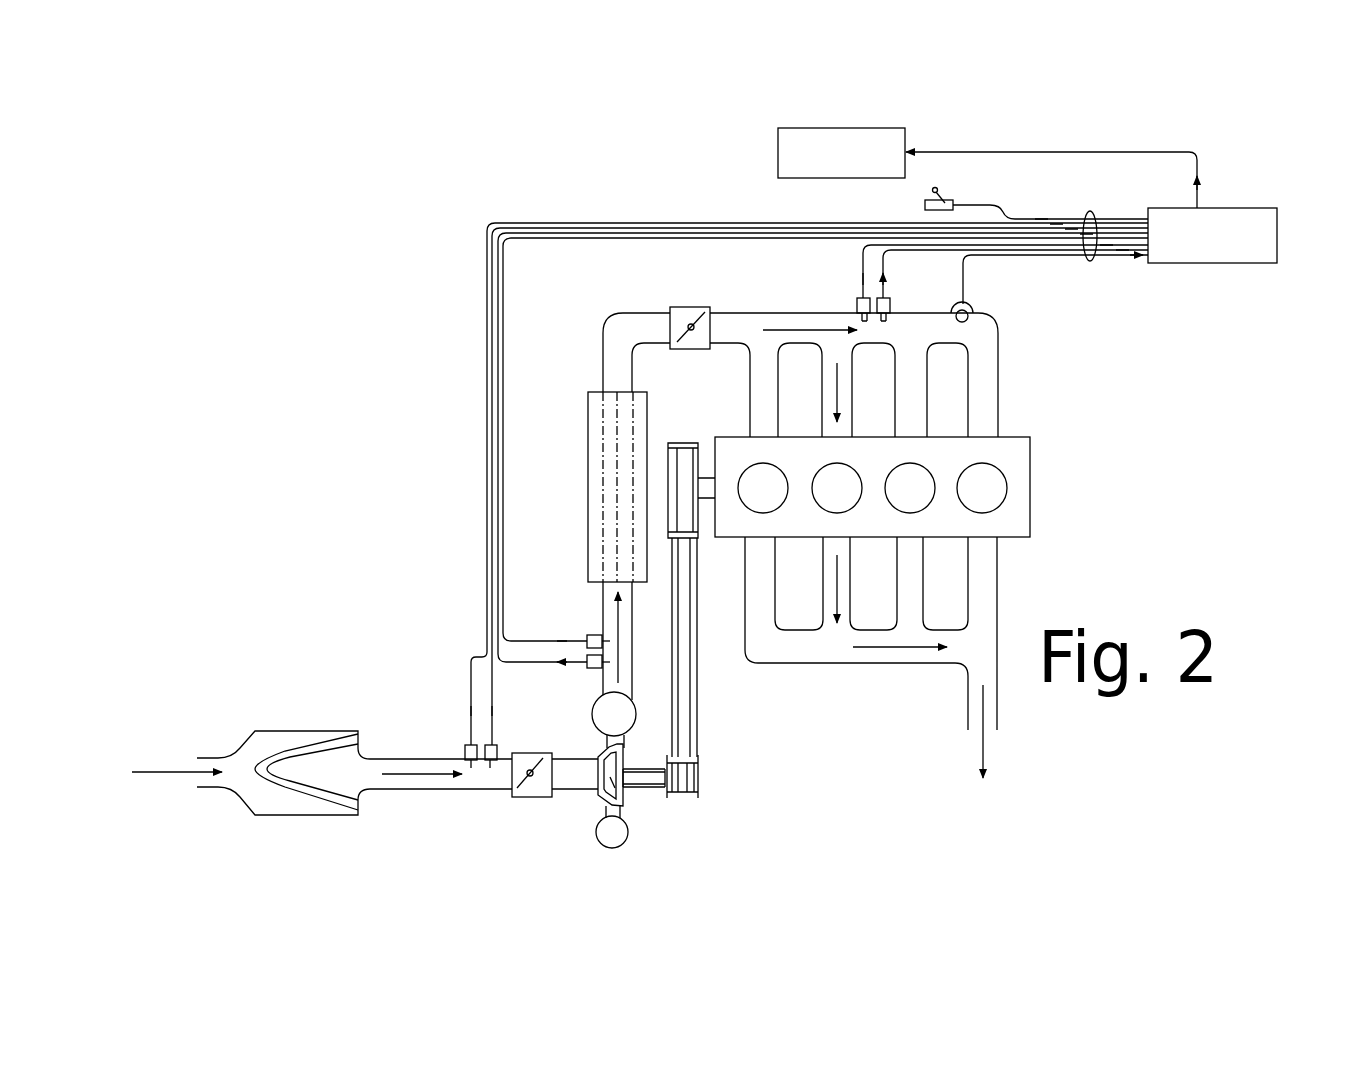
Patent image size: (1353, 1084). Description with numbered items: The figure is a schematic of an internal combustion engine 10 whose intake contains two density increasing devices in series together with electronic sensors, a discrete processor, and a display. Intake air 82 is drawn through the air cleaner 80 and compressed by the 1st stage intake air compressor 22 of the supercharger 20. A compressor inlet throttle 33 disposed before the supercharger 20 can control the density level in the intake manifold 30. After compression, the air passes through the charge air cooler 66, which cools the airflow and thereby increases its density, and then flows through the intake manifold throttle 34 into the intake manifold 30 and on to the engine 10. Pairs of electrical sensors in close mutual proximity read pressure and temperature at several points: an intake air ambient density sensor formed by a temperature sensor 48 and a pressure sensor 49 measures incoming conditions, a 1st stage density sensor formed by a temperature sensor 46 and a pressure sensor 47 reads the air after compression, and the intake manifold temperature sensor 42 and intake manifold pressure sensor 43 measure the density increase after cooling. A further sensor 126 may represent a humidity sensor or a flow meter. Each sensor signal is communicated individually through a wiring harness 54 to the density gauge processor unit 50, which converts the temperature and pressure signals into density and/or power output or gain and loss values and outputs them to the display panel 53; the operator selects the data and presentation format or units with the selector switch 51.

The internal combustion engine 10 is at (742, 520).
The supercharger 20 is at (640, 790).
The 1st stage intake air compressor 22 is at (622, 800).
The intake manifold 30 is at (973, 331).
The compressor inlet throttle 33 is at (528, 789).
The intake manifold throttle 34 is at (690, 345).
The intake manifold temperature sensor 42 is at (857, 303).
The intake manifold pressure sensor 43 is at (890, 301).
The temperature sensor 46 is at (590, 637).
The pressure sensor 47 is at (585, 667).
The temperature sensor 48 is at (497, 747).
The pressure sensor 49 is at (461, 743).
The density gauge processor unit 50 is at (1219, 226).
The selector switch 51 is at (942, 202).
The display panel 53 is at (848, 181).
The wiring harness 54 is at (1094, 258).
The charge air cooler 66 is at (585, 425).
The air cleaner 80 is at (293, 825).
The intake air 82 is at (157, 772).
The sensor 126 is at (976, 304).